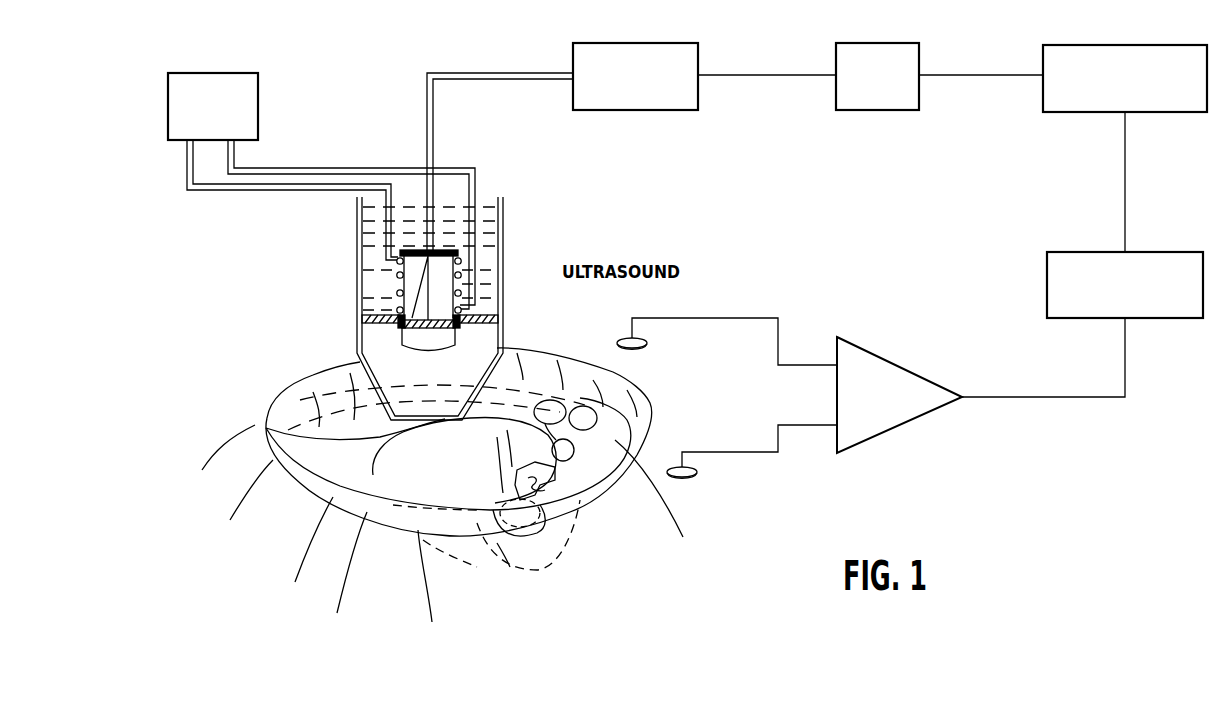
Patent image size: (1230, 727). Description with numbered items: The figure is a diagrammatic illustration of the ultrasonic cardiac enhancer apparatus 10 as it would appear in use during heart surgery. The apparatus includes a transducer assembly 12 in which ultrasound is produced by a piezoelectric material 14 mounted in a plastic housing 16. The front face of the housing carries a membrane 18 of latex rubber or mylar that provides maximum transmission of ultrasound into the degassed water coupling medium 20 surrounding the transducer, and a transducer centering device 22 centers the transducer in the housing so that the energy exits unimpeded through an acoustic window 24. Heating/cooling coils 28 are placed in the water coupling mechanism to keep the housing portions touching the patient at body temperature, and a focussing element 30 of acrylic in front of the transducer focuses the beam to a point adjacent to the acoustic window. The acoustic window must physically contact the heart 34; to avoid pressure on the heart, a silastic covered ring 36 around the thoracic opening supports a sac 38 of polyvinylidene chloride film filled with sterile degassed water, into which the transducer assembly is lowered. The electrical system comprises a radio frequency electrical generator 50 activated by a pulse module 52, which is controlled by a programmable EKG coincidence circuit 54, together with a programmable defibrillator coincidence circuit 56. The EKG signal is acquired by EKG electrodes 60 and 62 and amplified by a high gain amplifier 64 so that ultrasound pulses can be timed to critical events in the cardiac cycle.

The ultrasonic cardiac enhancer apparatus 10 is at (402, 138).
The transducer assembly 12 is at (504, 290).
The piezoelectric material 14 is at (400, 323).
The housing 16 is at (355, 298).
The membrane 18 is at (397, 431).
The degassed water coupling medium 20 is at (360, 222).
The transducer centering device 22 is at (492, 303).
The acoustic window 24 is at (390, 396).
The heating/cooling coils 28 is at (400, 273).
The focussing element 30 is at (440, 340).
The heart 34 is at (410, 527).
The silastic covered ring 36 is at (295, 481).
The sac 38 is at (288, 400).
The radio frequency electrical generator 50 is at (652, 110).
The pulse module 52 is at (874, 110).
The programmable EKG coincidence circuit 54 is at (1155, 318).
The programmable defibrillator coincidence circuit 56 is at (1152, 112).
The EKG electrode 60 is at (648, 339).
The EKG electrode 62 is at (752, 470).
The high gain amplifier 64 is at (925, 368).